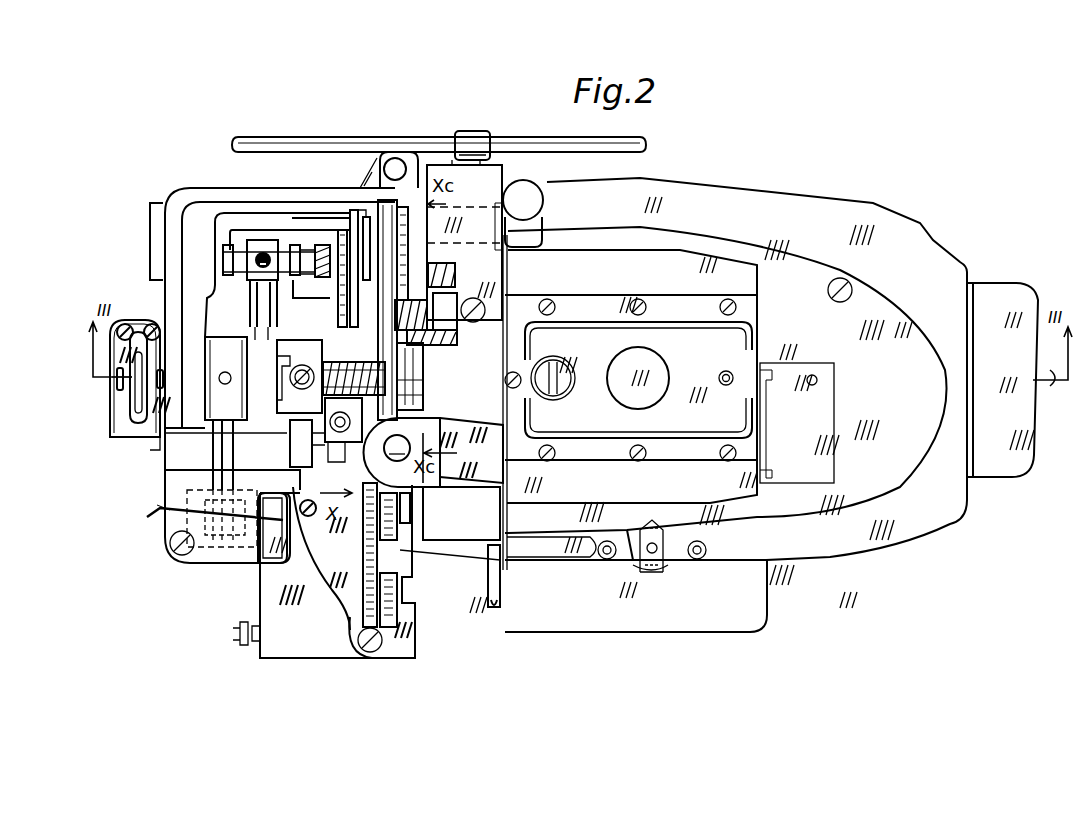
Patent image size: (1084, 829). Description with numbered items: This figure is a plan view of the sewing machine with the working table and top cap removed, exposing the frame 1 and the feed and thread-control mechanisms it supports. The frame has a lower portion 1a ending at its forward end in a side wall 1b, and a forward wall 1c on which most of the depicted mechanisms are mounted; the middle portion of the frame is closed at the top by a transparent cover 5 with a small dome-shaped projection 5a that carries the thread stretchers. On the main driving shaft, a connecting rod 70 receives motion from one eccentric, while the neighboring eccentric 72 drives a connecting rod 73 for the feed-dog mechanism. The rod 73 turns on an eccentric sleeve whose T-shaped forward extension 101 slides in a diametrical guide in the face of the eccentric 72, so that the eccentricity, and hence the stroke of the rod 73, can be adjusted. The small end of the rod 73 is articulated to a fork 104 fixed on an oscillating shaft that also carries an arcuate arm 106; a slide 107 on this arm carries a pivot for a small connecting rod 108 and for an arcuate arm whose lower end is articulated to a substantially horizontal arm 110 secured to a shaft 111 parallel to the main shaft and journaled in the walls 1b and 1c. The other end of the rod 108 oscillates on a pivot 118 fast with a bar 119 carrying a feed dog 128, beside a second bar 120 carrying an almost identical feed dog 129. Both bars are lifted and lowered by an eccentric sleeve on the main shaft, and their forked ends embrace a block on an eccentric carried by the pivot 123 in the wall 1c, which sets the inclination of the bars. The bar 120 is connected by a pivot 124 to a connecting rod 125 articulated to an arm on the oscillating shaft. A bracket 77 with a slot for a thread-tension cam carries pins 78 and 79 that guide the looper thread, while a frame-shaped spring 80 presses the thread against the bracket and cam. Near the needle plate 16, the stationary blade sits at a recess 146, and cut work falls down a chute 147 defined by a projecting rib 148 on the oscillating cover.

The frame 1 is at (818, 208).
The lower portion of the frame 1a is at (247, 195).
The side wall 1b is at (165, 490).
The forward wall of the frame 1c is at (486, 160).
The cover 5 is at (748, 340).
The dome-shaped projection 5a is at (655, 362).
The needle plate 16 is at (407, 653).
The connecting rod 70 is at (224, 446).
The eccentric 72 is at (298, 352).
The connecting rod 73 is at (262, 309).
The bracket 77 is at (118, 423).
The pin 78 is at (110, 378).
The pin 79 is at (160, 377).
The frame-shaped spring 80 is at (138, 433).
The forward extension 101 is at (300, 365).
The fork 104 is at (285, 252).
The arcuate arm 106 is at (330, 247).
The slide 107 is at (322, 245).
The connecting rod 108 is at (296, 280).
The horizontal arm 110 is at (352, 405).
The shaft 111 is at (350, 432).
The pivot 118 is at (330, 396).
The bar 119 is at (427, 401).
The second bar 120 is at (423, 363).
The pivot 123 is at (463, 235).
The pivot 124 is at (423, 348).
The connecting rod 125 is at (406, 272).
The feed dog 128 is at (377, 660).
The feed dog 129 is at (367, 522).
The recess 146 is at (403, 590).
The chute 147 is at (482, 580).
The projecting rib 148 is at (500, 605).